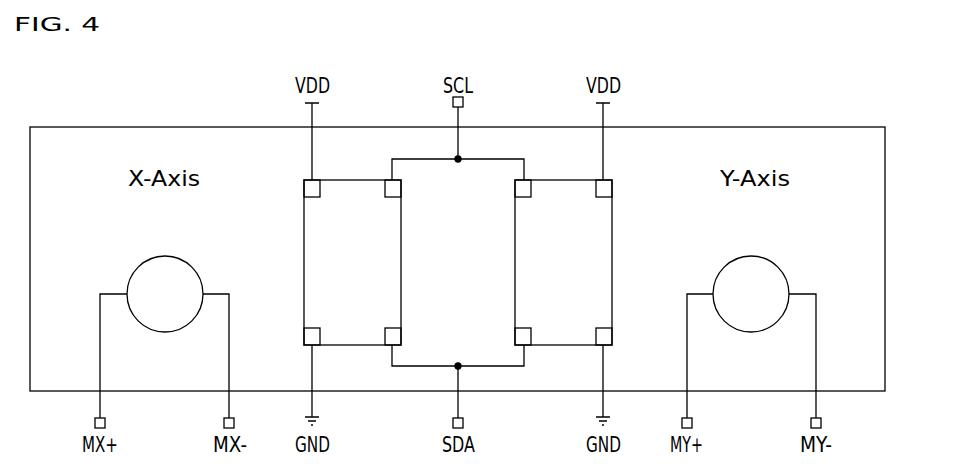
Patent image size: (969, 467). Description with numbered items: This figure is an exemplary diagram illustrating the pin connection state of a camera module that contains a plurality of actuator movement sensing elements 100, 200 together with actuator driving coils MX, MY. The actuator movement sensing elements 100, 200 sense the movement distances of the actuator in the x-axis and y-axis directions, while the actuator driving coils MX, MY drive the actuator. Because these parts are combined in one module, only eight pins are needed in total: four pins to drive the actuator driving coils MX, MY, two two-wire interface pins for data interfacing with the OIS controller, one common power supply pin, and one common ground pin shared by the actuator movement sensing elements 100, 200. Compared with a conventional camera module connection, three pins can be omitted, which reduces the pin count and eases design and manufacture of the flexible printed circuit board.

The actuator movement sensing element 100 is at (304, 262).
The actuator movement sensing element 200 is at (612, 262).
The actuator driving coil MX is at (164, 342).
The actuator driving coil MY is at (751, 342).